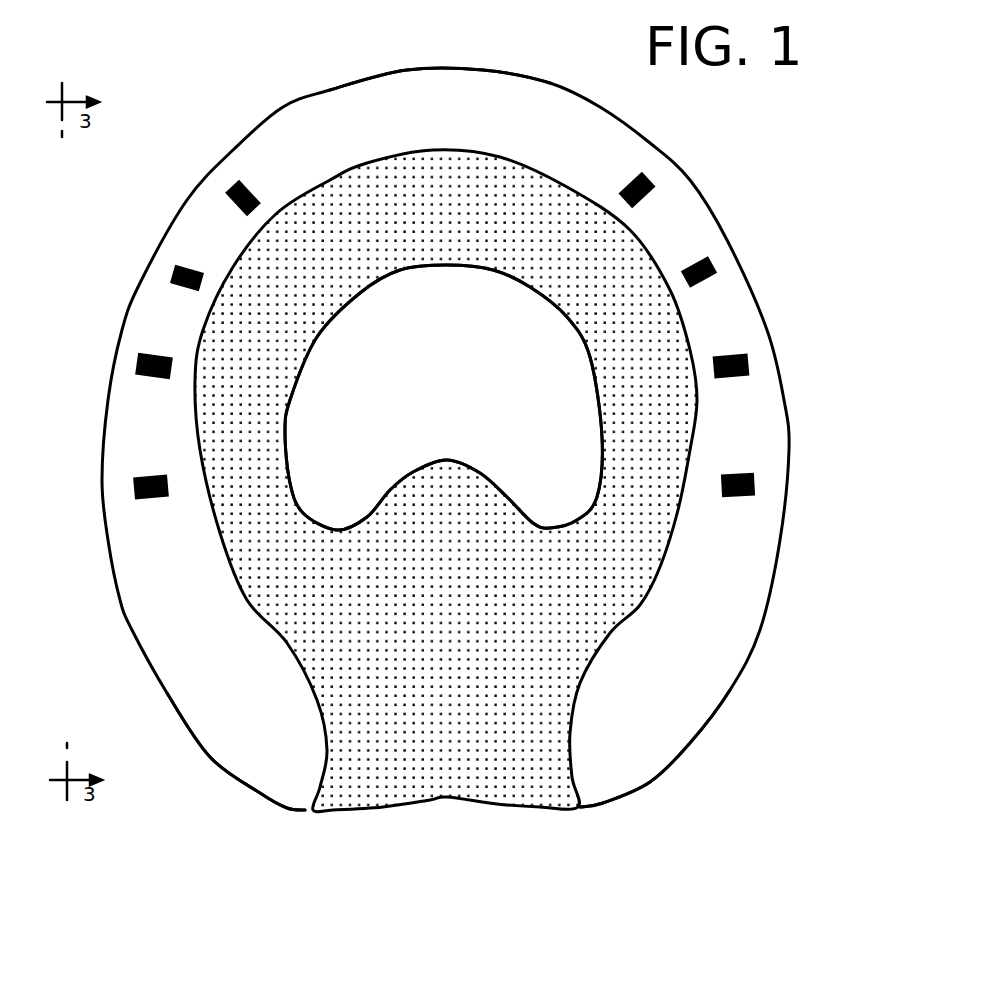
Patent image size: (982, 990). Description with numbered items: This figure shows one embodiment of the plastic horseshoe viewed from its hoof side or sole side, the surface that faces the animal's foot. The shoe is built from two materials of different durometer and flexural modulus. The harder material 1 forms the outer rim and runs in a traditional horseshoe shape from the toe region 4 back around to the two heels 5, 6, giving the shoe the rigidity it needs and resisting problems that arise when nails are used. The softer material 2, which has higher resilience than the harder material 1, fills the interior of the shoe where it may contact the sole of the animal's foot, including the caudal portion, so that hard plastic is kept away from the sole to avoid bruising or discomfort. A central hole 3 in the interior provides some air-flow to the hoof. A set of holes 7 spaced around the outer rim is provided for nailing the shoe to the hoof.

The harder material 1 is at (695, 228).
The softer material 2 is at (678, 360).
The central hole 3 is at (560, 455).
The toe region 4 is at (427, 87).
The heel 5 is at (272, 752).
The heel 6 is at (612, 757).
The holes 7 is at (710, 262).